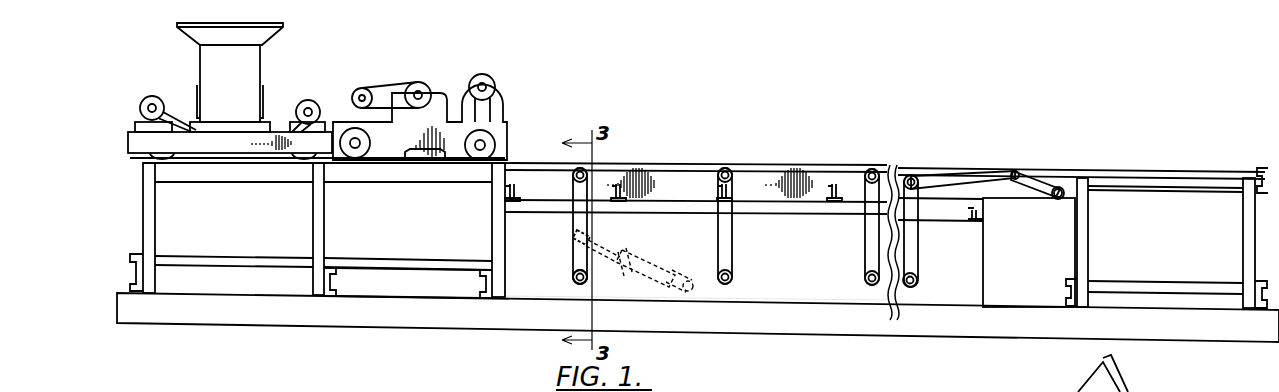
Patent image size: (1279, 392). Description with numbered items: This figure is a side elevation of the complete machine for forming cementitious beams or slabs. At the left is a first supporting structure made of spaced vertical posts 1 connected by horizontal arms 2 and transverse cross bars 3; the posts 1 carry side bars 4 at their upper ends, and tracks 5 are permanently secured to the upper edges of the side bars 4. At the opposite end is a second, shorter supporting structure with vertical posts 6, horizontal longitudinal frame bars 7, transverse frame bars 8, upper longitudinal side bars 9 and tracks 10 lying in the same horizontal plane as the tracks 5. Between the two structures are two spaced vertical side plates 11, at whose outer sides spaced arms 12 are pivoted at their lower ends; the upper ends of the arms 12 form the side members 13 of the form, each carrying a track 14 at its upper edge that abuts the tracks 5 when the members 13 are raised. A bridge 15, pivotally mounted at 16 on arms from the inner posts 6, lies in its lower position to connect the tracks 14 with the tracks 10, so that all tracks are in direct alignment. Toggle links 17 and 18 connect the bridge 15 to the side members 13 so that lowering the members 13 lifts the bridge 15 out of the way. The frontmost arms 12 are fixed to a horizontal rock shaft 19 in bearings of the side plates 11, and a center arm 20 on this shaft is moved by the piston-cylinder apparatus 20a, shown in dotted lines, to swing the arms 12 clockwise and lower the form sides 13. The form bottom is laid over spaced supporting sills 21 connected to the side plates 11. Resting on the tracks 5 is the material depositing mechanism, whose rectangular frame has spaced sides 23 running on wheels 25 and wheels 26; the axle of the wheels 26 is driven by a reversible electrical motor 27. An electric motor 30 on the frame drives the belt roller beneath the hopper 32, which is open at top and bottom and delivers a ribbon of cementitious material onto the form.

The vertical posts 1 is at (148, 222).
The horizontal arms 2 is at (372, 264).
The transverse cross bars 3 is at (148, 279).
The side bars 4 is at (262, 172).
The tracks 5 is at (222, 160).
The vertical posts 6 is at (1090, 244).
The horizontal longitudinal frame bars 7 is at (1153, 284).
The transverse frame bars 8 is at (1257, 188).
The upper longitudinal side bars 9 is at (1168, 191).
The tracks 10 is at (1178, 175).
The vertical side plates 11 is at (783, 270).
The arms 12 is at (575, 222).
The form side members 13 is at (686, 195).
The track 14 is at (683, 167).
The bridge 15 is at (1010, 200).
The pivot 16 is at (1040, 190).
The toggle link 17 is at (1035, 174).
The toggle link 18 is at (953, 180).
The rock shaft 19 is at (572, 284).
The center arm 20 is at (580, 256).
The piston-cylinder apparatus 20a is at (624, 270).
The supporting sills 21 is at (513, 197).
The frame sides 23 is at (197, 145).
The wheels 25 is at (143, 163).
The wheels 26 is at (302, 158).
The reversible electrical motor 27 is at (312, 102).
The electric motor 30 is at (152, 100).
The hopper 32 is at (245, 75).